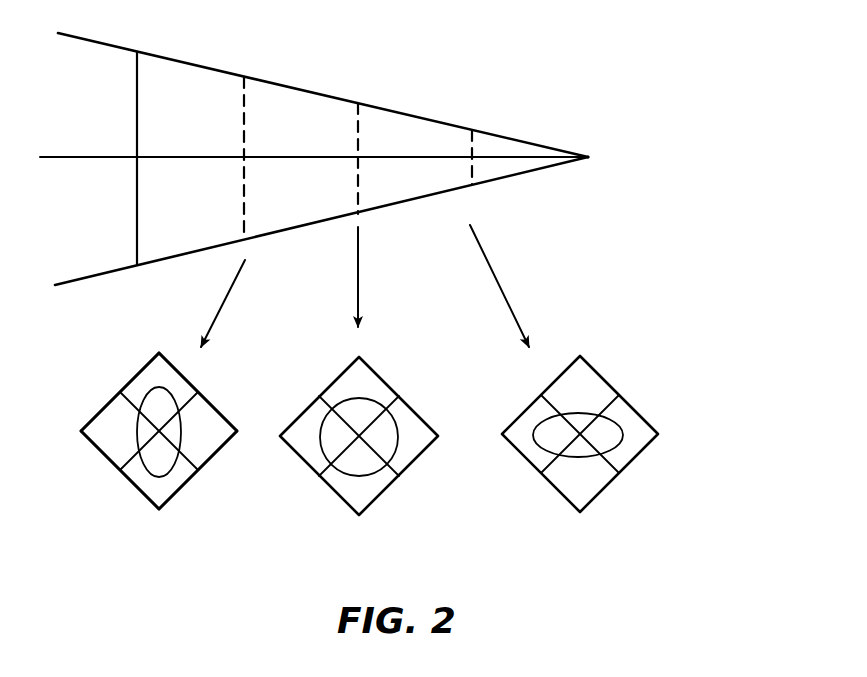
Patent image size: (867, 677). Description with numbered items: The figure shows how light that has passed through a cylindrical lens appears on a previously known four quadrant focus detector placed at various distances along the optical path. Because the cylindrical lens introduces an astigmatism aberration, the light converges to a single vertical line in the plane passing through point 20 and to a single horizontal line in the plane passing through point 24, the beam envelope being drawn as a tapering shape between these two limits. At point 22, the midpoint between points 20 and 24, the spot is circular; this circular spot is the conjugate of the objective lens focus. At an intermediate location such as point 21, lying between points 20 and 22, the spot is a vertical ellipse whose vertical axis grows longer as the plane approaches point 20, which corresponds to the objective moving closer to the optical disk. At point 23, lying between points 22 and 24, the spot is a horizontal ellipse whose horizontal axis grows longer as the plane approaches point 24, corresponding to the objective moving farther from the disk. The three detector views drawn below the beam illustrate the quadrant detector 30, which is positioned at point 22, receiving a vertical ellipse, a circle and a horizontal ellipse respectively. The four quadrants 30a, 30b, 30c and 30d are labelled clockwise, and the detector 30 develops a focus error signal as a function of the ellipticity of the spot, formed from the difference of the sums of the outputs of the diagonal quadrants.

The point 20 is at (142, 157).
The point 21 is at (250, 157).
The point 22 is at (362, 158).
The point 23 is at (480, 157).
The point 24 is at (588, 157).
The quadrant detector 30 is at (710, 338).
The quadrant 30a is at (110, 400).
The quadrant 30b is at (168, 358).
The quadrant 30c is at (220, 453).
The quadrant 30d is at (125, 477).